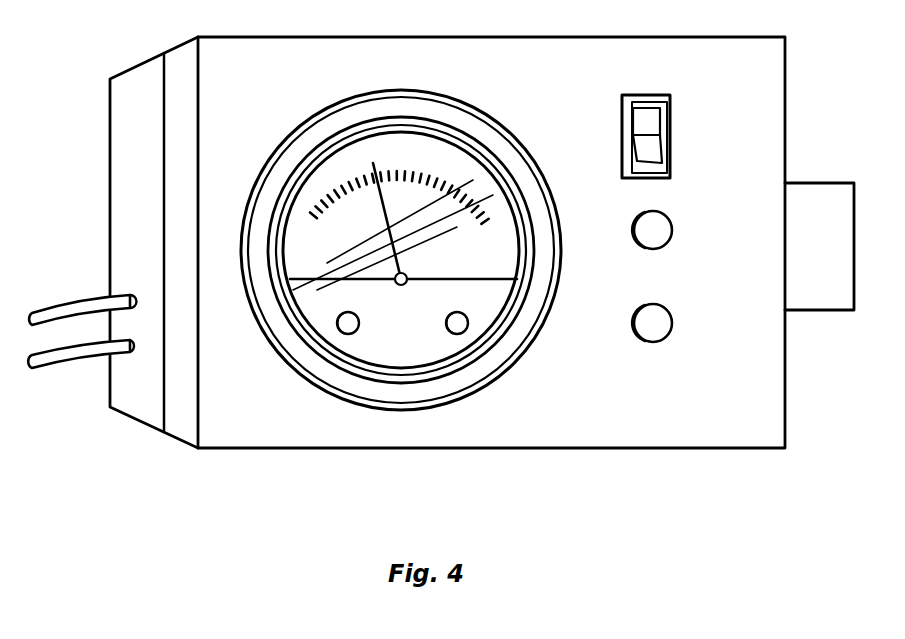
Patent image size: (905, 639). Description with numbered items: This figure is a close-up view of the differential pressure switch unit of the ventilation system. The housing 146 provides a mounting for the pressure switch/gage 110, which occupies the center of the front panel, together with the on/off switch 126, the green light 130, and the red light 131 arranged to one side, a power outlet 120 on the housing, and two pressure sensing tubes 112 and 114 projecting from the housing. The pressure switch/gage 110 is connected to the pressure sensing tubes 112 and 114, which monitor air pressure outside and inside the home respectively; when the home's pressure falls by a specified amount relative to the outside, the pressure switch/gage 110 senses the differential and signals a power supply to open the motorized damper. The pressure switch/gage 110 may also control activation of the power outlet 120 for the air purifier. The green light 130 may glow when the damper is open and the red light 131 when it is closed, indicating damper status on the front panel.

The pressure switch/gage 110 is at (463, 180).
The pressure sensing tube 112 is at (97, 350).
The pressure sensing tube 114 is at (98, 295).
The power outlet 120 is at (812, 183).
The on/off switch 126 is at (662, 127).
The green light 130 is at (668, 230).
The red light 131 is at (667, 323).
The housing 146 is at (435, 448).